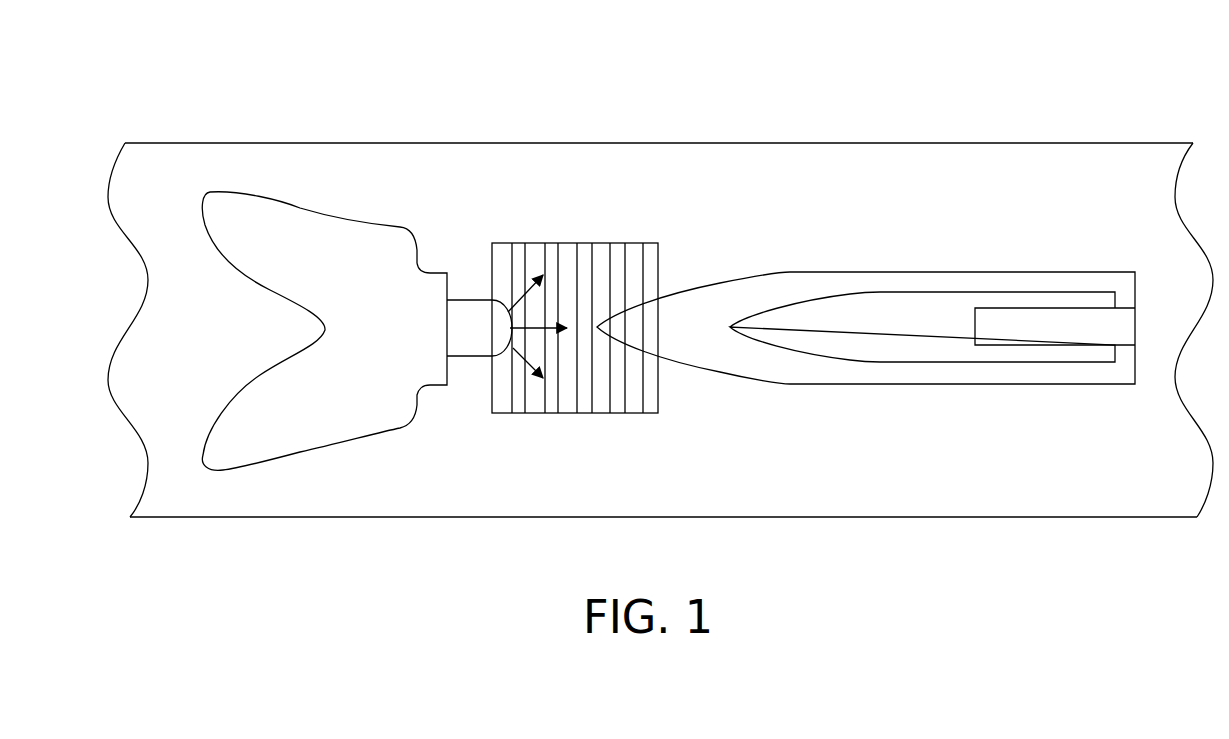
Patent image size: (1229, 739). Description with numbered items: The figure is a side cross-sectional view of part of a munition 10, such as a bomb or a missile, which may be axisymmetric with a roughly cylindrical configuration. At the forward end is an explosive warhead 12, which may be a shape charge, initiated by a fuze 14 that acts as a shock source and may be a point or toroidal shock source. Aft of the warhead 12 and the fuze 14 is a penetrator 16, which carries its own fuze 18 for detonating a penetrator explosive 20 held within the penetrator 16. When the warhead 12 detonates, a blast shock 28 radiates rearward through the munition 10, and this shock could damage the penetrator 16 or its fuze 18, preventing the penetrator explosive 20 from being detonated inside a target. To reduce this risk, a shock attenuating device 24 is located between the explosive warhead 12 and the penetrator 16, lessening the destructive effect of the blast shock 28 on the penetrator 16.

The munition 10 is at (327, 107).
The explosive warhead 12 is at (292, 437).
The fuze 14 is at (468, 342).
The penetrator 16 is at (790, 283).
The fuze 18 is at (1052, 322).
The penetrator explosive 20 is at (905, 312).
The shock attenuating device 24 is at (573, 210).
The blast shock 28 is at (518, 357).